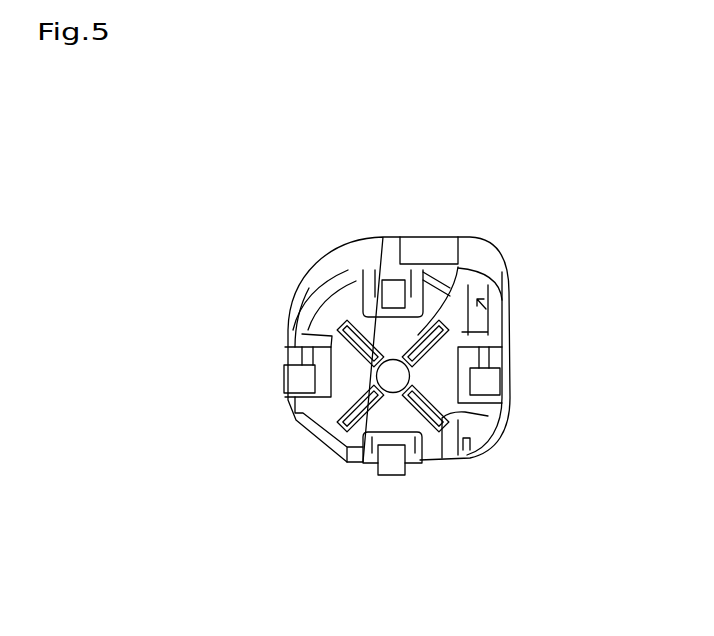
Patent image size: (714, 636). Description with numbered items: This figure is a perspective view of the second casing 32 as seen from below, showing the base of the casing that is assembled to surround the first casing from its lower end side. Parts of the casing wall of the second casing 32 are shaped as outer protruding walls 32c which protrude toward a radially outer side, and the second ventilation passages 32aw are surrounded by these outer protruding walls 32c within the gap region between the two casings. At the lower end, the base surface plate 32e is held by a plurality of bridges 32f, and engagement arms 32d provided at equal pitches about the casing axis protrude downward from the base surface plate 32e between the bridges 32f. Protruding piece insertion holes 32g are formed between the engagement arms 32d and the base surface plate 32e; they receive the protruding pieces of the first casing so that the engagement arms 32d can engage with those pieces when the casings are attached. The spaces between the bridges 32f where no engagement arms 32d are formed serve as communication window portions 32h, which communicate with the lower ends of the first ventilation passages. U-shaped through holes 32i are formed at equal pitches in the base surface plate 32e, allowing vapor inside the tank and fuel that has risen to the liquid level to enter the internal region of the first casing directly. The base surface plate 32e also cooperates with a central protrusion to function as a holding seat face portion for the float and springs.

The second casing 32 is at (340, 272).
The outer protruding wall 32c is at (488, 268).
The engagement arm 32d is at (393, 280).
The base surface plate 32e is at (452, 264).
The bridge 32f is at (363, 272).
The protruding piece insertion hole 32g is at (373, 268).
The communication window portion 32h is at (335, 312).
The U-shaped through hole 32i is at (323, 435).
The second ventilation passage 32aw is at (492, 305).